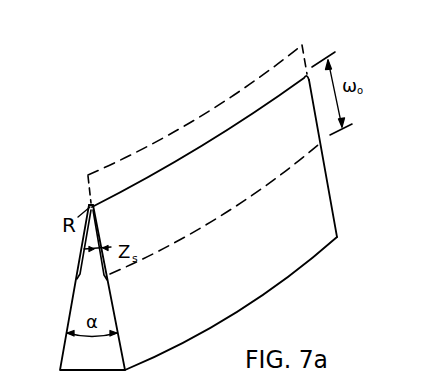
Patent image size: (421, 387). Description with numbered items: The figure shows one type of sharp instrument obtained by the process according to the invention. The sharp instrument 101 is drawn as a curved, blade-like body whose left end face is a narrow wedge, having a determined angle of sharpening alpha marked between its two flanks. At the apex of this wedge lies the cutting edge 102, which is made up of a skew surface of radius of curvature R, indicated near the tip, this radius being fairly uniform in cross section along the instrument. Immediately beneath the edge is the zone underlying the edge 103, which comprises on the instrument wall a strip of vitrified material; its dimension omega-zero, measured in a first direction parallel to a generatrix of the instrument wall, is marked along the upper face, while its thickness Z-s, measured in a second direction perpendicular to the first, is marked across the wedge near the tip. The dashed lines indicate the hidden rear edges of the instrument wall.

The sharp instrument 101 is at (250, 238).
The cutting edge 102 is at (201, 143).
The zone underlying the edge 103 is at (173, 199).